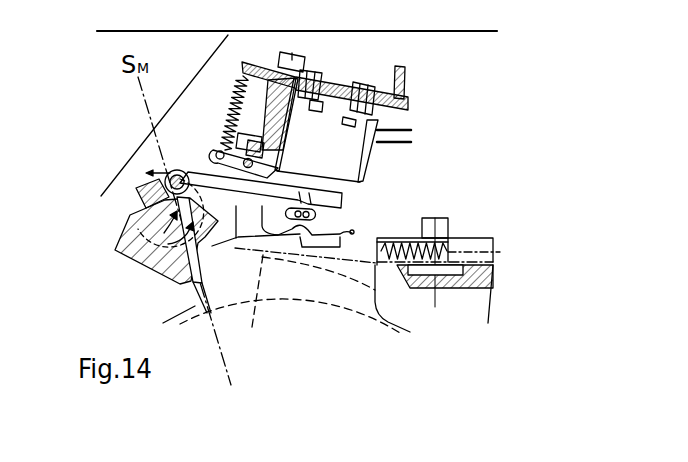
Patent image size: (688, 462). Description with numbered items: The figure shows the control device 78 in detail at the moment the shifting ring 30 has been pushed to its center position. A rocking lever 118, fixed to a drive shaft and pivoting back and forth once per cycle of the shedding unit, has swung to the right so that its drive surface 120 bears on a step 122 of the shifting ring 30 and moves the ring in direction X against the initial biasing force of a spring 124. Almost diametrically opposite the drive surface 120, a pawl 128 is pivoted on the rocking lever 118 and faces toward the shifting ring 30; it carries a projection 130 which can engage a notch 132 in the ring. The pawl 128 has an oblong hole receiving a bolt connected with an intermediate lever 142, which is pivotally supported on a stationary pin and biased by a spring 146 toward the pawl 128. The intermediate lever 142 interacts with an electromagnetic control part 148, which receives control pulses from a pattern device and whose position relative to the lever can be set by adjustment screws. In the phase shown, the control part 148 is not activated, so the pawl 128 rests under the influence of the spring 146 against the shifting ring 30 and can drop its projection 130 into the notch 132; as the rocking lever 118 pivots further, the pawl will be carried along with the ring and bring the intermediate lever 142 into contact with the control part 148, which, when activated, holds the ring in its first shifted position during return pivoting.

The shifting ring 30 is at (387, 324).
The control device 78 is at (480, 130).
The rocking lever 118 is at (167, 268).
The drive surface 120 is at (198, 268).
The step 122 is at (200, 300).
The spring 124 is at (399, 240).
The pawl 128 is at (191, 170).
The projection 130 is at (351, 228).
The notch 132 is at (354, 233).
The intermediate lever 142 is at (283, 180).
The spring 146 is at (234, 110).
The electromagnetic control part 148 is at (352, 153).